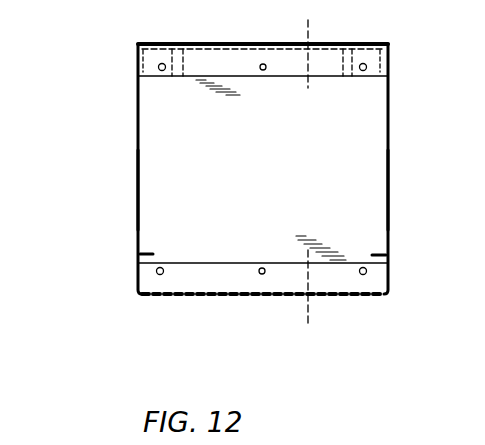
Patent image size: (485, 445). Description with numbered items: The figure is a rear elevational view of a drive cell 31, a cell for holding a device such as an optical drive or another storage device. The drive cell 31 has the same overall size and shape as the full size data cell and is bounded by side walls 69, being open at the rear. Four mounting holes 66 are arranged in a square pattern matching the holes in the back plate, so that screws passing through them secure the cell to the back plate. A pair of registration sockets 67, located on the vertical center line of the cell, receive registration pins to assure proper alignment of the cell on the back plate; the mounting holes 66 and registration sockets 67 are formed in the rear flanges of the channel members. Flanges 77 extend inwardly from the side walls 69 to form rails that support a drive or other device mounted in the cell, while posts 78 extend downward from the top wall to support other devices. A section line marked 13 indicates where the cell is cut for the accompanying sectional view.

The drive cell 31 is at (118, 152).
The side walls 69 is at (137, 193).
The posts 78 is at (178, 76).
The mounting holes 66 is at (158, 67).
The registration sockets 67 is at (264, 71).
The flanges 77 is at (150, 251).
The section line 13 is at (308, 20).